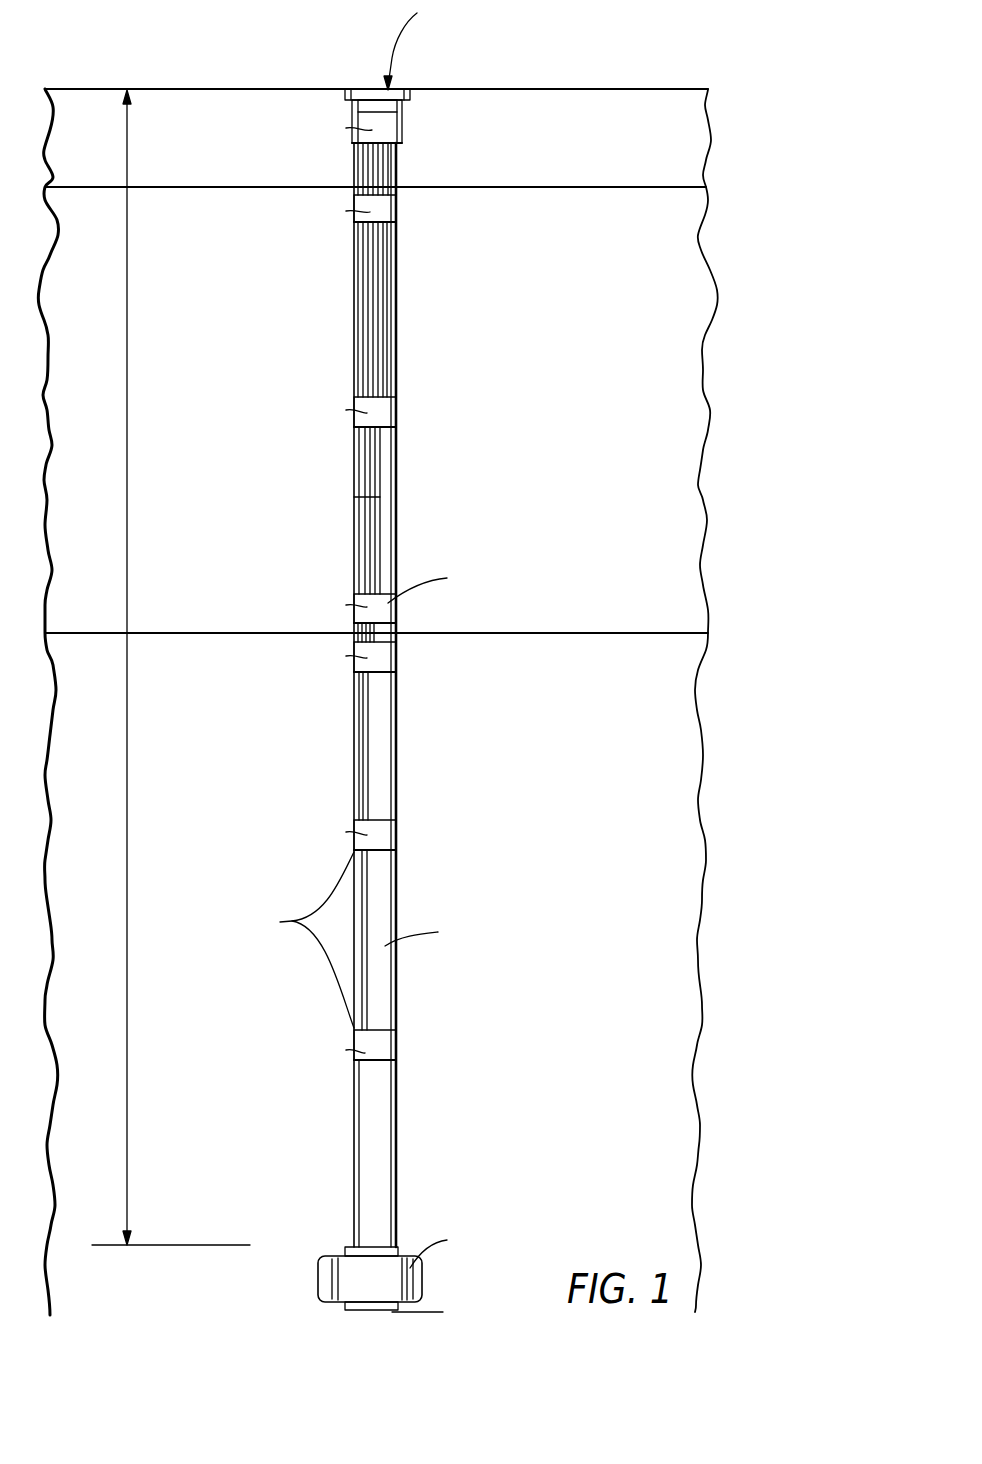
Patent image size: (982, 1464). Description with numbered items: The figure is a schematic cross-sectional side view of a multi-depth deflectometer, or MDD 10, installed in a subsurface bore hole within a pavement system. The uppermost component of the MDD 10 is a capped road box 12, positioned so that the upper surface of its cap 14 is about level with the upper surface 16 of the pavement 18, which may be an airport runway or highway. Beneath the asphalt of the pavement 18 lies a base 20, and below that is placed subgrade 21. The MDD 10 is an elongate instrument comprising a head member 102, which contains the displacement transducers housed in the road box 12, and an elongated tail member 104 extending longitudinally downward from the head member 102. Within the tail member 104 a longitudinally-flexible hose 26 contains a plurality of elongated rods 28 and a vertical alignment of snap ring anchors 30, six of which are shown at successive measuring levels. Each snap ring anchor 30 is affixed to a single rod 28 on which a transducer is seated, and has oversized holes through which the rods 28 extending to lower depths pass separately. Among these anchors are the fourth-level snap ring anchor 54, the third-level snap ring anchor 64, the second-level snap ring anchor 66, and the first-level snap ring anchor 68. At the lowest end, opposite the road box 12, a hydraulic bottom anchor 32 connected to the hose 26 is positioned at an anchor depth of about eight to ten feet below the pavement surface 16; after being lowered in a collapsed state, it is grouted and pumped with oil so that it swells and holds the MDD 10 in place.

The MDD 10 is at (457, 294).
The road box 12 is at (366, 90).
The cap 14 is at (360, 90).
The upper surface of pavement 16 is at (193, 88).
The pavement 18 is at (678, 105).
The base 20 is at (676, 207).
The placed subgrade 21 is at (694, 656).
The hose 26 is at (385, 905).
The rods 28 is at (362, 177).
The snap ring anchors 30 is at (388, 211).
The bottom anchor 32 is at (405, 1255).
The ML-4 snap ring anchor 54 is at (383, 615).
The ML-3 snap ring anchor 64 is at (388, 655).
The ML-2 snap ring anchor 66 is at (387, 825).
The ML-1 snap ring anchor 68 is at (383, 1051).
The head member 102 is at (404, 135).
The tail member 104 is at (355, 472).